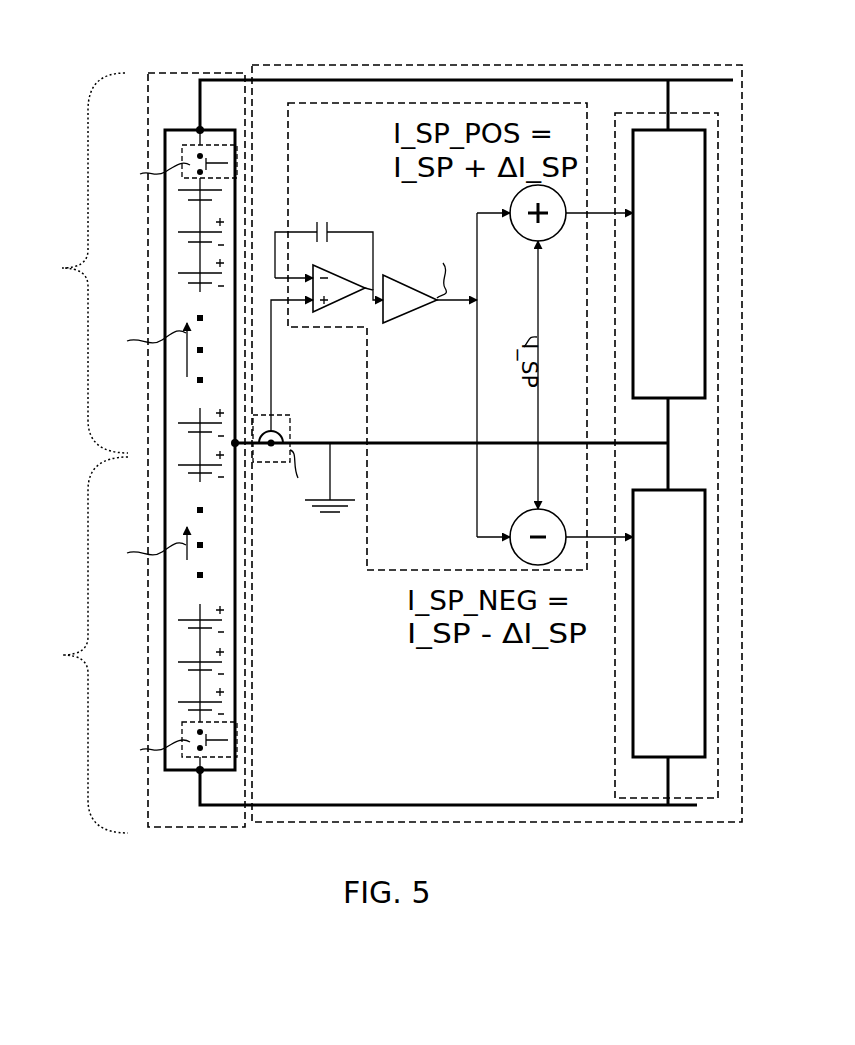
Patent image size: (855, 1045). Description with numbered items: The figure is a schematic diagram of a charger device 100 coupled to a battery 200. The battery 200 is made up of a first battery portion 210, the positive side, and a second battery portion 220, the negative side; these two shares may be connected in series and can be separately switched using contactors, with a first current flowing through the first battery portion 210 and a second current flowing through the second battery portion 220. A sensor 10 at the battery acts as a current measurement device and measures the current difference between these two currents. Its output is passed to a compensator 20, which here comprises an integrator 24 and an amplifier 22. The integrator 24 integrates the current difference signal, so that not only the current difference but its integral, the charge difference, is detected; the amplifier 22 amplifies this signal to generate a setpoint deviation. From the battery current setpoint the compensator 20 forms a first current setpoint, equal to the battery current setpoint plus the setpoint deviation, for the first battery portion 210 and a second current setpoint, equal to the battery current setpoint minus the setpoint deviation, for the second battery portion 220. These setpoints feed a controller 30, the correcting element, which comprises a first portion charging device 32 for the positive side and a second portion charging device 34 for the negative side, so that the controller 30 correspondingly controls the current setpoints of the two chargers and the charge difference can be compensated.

The sensor 10 is at (288, 417).
The compensator 20 is at (370, 572).
The amplifier 22 is at (420, 308).
The integrator 24 is at (340, 305).
The controller 30 is at (704, 455).
The first portion charging device 32 is at (707, 170).
The second portion charging device 34 is at (707, 523).
The charger device 100 is at (487, 64).
The battery 200 is at (238, 78).
The first battery portion 210 is at (70, 263).
The second battery portion 220 is at (70, 645).